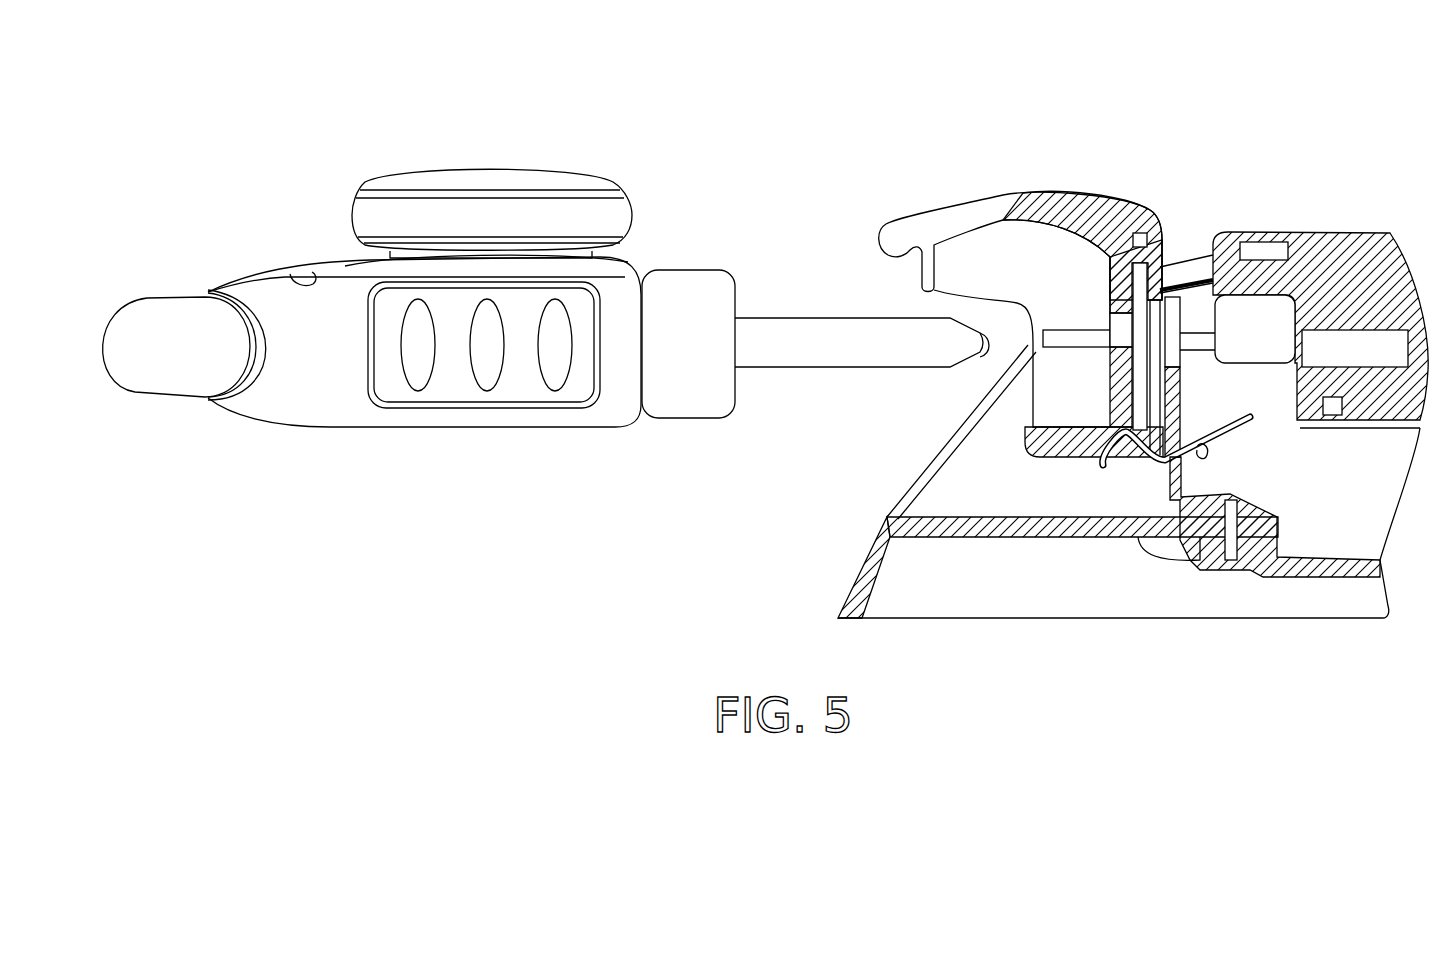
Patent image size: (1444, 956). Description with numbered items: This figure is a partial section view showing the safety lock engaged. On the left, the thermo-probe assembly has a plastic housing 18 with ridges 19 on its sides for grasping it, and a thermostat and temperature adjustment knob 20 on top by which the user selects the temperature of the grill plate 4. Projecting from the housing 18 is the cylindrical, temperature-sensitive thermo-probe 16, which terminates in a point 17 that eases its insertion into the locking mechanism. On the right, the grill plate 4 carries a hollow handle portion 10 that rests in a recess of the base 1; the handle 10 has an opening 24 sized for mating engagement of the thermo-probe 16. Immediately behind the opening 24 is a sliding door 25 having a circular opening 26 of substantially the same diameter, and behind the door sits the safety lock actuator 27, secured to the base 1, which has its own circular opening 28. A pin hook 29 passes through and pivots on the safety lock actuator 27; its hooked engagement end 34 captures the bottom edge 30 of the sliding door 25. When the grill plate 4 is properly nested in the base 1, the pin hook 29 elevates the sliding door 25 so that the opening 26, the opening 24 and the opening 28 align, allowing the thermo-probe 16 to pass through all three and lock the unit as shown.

The base 1 is at (1022, 622).
The grill plate 4 is at (1368, 247).
The handle portion 10 is at (1000, 208).
The thermo-probe 16 is at (788, 343).
The point 17 is at (960, 370).
The housing 18 is at (300, 400).
The ridges 19 is at (487, 380).
The thermostat and temperature adjustment knob 20 is at (548, 165).
The opening 24 is at (1110, 322).
The sliding door 25 is at (1108, 360).
The circular opening 26 is at (1108, 403).
The safety lock actuator 27 is at (1183, 393).
The circular opening 28 is at (1207, 287).
The pin hook 29 is at (1162, 460).
The bottom edge 30 is at (1242, 424).
The engagement end 34 is at (1107, 462).